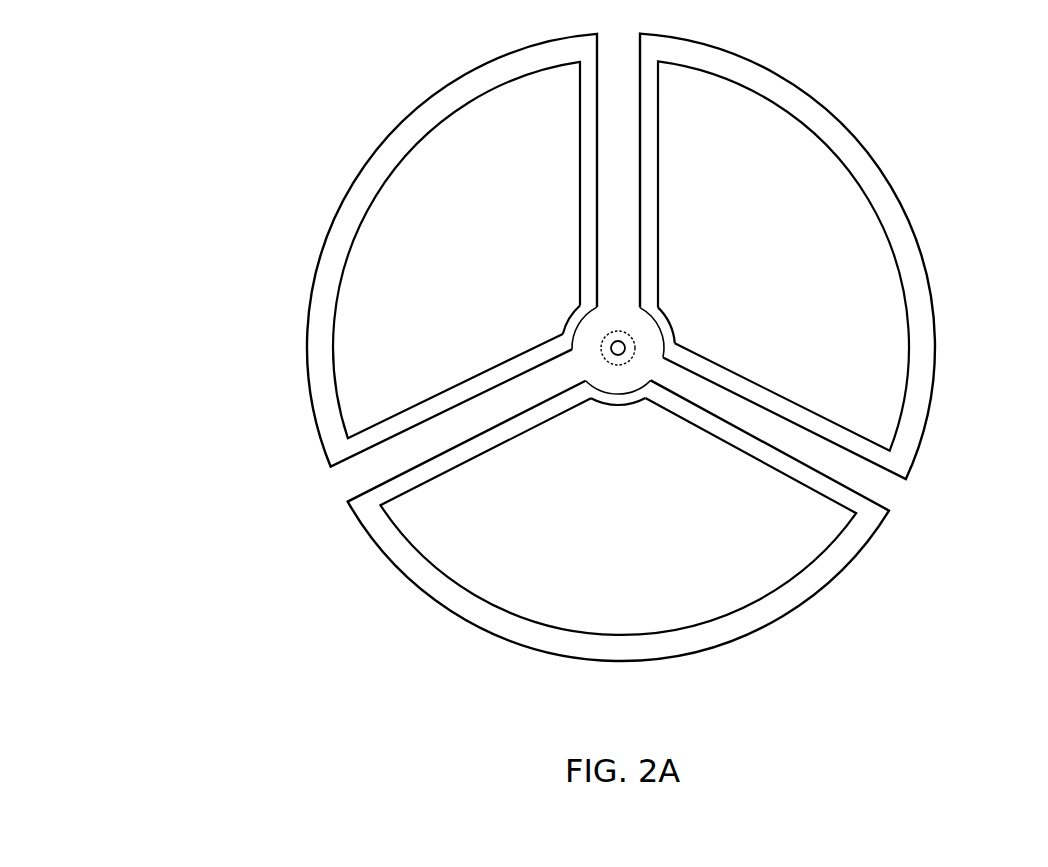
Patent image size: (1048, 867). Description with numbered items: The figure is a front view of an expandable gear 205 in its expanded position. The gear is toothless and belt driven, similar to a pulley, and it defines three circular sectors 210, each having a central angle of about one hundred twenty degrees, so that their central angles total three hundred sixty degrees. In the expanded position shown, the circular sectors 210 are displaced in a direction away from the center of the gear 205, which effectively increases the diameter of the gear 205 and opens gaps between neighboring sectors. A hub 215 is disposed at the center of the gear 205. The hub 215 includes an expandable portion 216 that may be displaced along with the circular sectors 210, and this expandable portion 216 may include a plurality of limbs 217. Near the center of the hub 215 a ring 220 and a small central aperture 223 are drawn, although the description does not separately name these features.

The gear 205 is at (272, 124).
The circular sectors 210 is at (500, 503).
The hub 215 is at (666, 373).
The expandable portion 216 is at (590, 333).
The limbs 217 is at (647, 332).
The hub ring 220 is at (613, 358).
The center aperture 223 is at (622, 354).